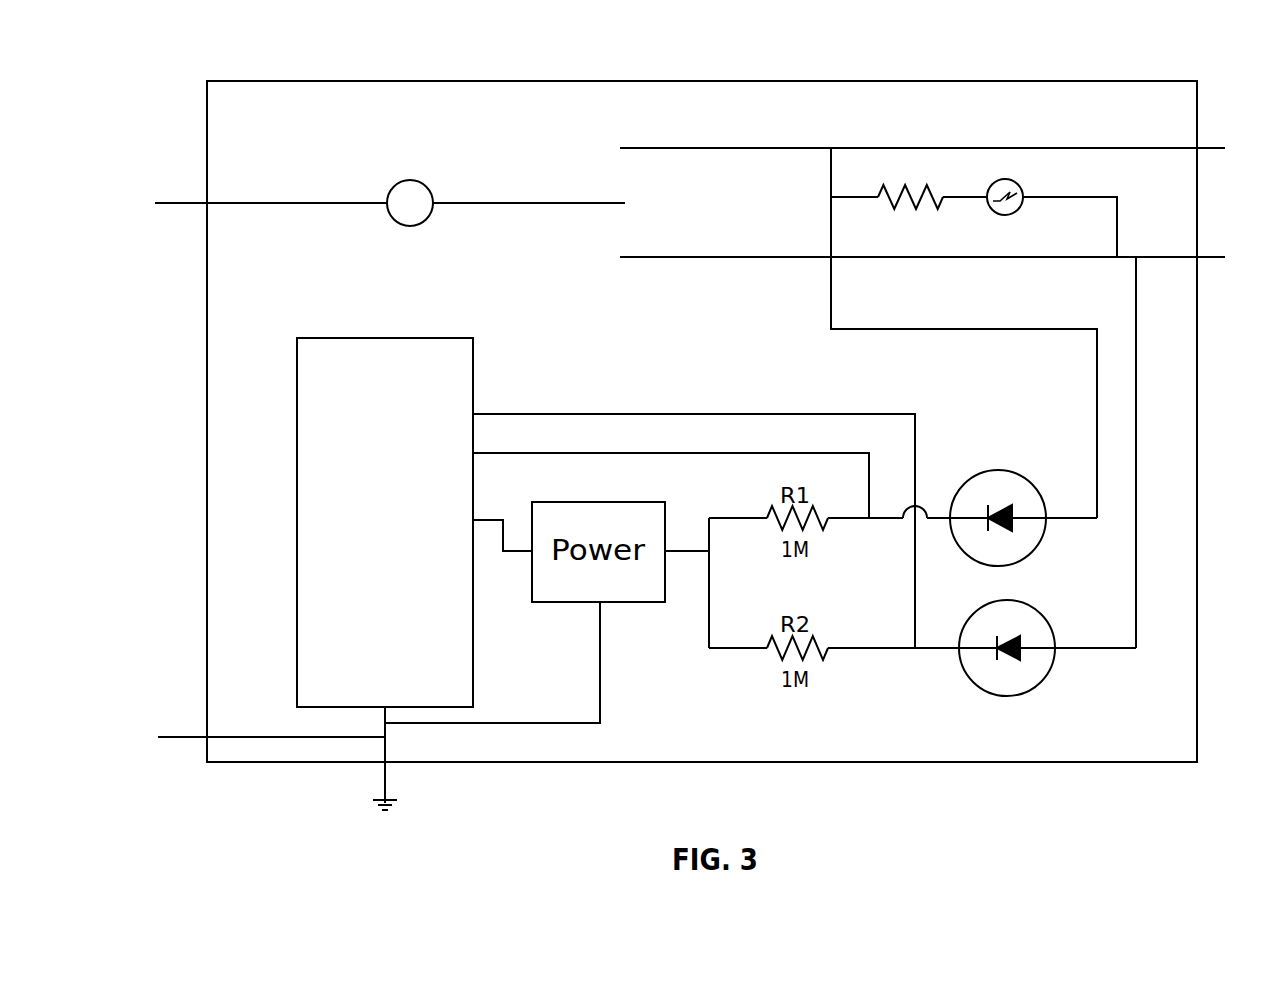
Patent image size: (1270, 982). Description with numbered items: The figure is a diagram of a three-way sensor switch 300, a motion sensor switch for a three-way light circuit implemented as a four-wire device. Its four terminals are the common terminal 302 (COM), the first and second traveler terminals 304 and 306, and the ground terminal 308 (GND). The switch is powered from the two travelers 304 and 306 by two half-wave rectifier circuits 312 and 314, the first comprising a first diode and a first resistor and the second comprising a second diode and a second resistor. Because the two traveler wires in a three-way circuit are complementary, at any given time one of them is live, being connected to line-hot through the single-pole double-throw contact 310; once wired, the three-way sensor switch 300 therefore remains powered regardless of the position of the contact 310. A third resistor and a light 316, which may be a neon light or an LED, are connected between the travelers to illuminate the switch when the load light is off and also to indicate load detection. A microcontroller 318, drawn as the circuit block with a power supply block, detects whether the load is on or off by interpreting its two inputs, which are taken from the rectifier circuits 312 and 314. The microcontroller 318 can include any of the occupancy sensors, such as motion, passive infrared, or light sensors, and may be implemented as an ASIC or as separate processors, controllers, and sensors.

The 3-way sensor switch 300 is at (996, 46).
The common terminal 302 is at (205, 207).
The traveler terminal L-1 304 is at (1199, 153).
The traveler terminal L-2 306 is at (1199, 262).
The ground terminal 308 is at (205, 740).
The contact 310 is at (890, 185).
The half-wave rectifier circuit 312 is at (946, 459).
The half-wave rectifier circuit 314 is at (935, 710).
The light 316 is at (1022, 191).
The microcontroller 318 is at (445, 337).